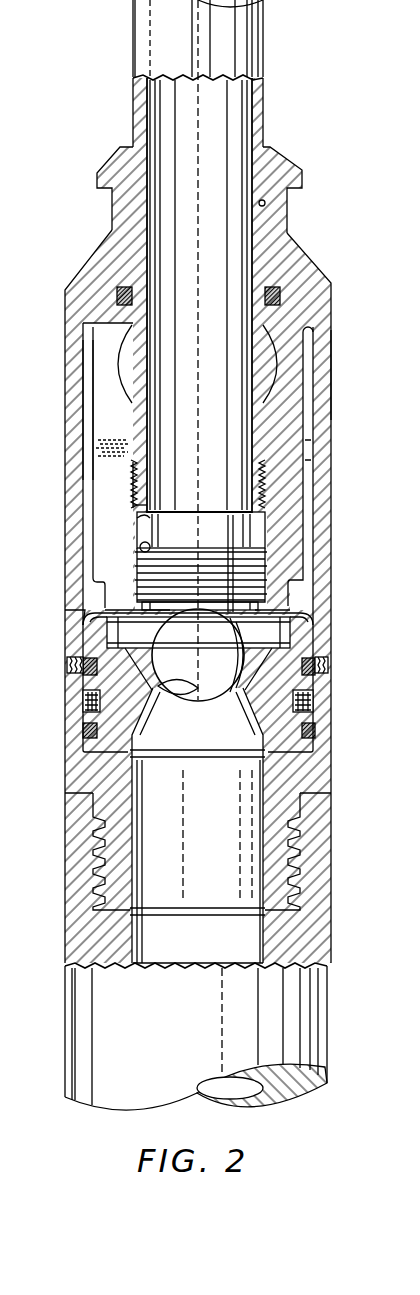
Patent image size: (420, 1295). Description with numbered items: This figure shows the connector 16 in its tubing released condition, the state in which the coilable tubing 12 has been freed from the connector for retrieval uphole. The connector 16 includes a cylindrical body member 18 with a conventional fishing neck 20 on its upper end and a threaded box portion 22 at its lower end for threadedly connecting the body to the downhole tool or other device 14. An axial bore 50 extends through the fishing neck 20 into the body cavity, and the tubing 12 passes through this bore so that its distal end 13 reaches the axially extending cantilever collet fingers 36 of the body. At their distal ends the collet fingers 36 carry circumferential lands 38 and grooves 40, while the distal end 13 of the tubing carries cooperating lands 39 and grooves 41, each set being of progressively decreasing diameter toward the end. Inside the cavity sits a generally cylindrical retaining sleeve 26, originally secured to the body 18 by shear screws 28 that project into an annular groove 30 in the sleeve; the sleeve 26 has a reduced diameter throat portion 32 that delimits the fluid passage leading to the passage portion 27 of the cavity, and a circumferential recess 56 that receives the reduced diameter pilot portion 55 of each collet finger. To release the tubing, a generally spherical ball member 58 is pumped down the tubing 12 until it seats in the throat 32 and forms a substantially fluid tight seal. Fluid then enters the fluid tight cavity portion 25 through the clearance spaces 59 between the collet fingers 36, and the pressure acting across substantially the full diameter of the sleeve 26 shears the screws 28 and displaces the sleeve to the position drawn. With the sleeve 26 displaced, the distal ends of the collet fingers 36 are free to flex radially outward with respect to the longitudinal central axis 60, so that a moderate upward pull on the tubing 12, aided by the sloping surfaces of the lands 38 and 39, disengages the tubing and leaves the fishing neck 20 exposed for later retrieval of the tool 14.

The steel coilable tube 12 is at (263, 60).
The distal end of the tubing 13 is at (150, 517).
The downhole tool or other device 14 is at (65, 1038).
The connector 16 is at (333, 331).
The cylindrical body member 18 is at (331, 385).
The fishing neck 20 is at (302, 166).
The threaded box portion 22 is at (280, 868).
The fluid tight cavity portion 25 is at (87, 413).
The retaining sleeve 26 is at (305, 628).
The passage portion of the cavity 27 is at (224, 897).
The shear screws 28 is at (328, 667).
The annular groove 30 is at (83, 705).
The reduced diameter throat portion 32 is at (183, 690).
The cantilever collet fingers 36 is at (305, 450).
The circumferential lands 38 is at (245, 548).
The cooperating lands 39 is at (135, 505).
The grooves 40 is at (140, 545).
The grooves 41 is at (133, 488).
The axial bore 50 is at (265, 204).
The reduced diameter pilot portion 55 is at (318, 598).
The circumferential recess 56 is at (102, 613).
The spherical ball member 58 is at (240, 633).
The clearance spaces 59 is at (230, 530).
The longitudinal central axis 60 is at (198, 118).